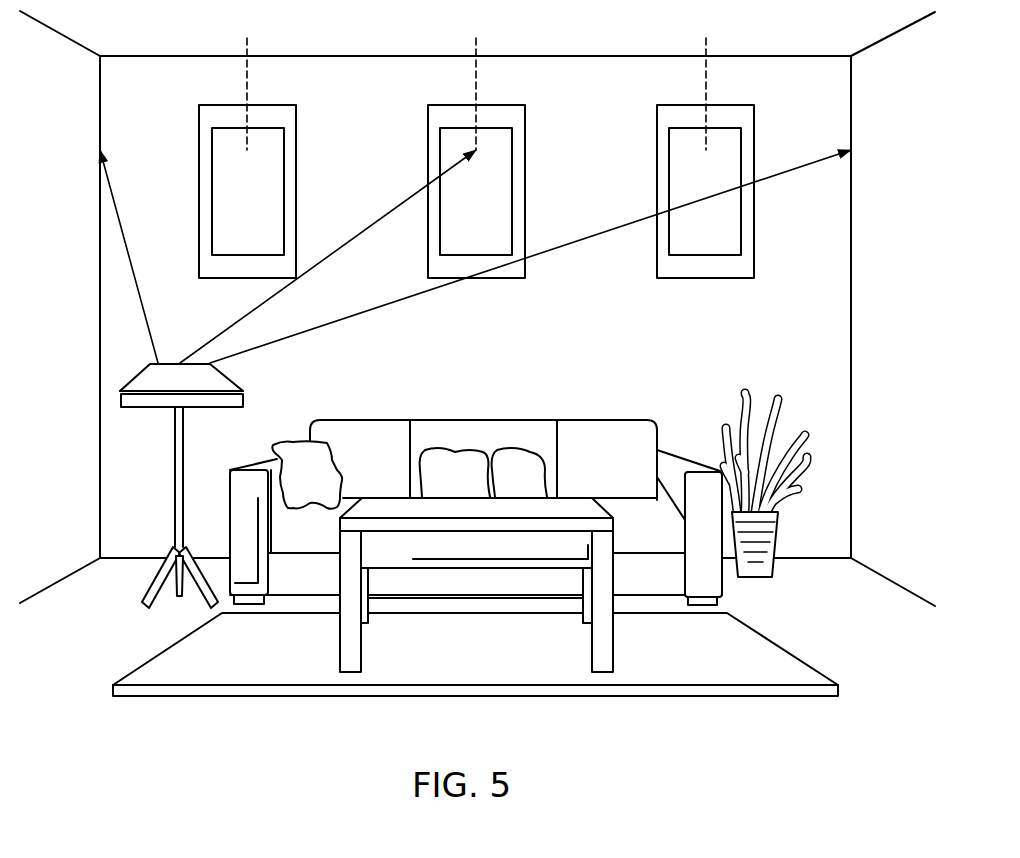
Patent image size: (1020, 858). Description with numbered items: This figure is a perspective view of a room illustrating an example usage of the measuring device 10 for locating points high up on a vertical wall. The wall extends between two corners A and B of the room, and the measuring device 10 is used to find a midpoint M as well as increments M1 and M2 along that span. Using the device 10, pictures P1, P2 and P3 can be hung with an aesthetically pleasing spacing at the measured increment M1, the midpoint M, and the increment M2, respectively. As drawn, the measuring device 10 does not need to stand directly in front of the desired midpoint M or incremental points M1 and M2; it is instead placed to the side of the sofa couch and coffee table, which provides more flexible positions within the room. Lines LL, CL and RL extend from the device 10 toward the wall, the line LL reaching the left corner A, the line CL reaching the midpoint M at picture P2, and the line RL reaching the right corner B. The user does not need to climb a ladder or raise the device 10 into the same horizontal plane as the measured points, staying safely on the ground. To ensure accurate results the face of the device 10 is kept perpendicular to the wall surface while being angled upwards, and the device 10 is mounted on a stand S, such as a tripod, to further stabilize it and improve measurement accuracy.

The corner A is at (100, 56).
The corner B is at (851, 56).
The increment M1 is at (247, 85).
The midpoint M is at (476, 85).
The increment M2 is at (706, 85).
The picture P1 is at (247, 191).
The picture P2 is at (476, 191).
The picture P3 is at (705, 191).
The left line of sight LL is at (129, 256).
The center line of sight CL is at (328, 256).
The right line of sight RL is at (530, 256).
The measuring device 10 is at (155, 414).
The stand S is at (170, 491).